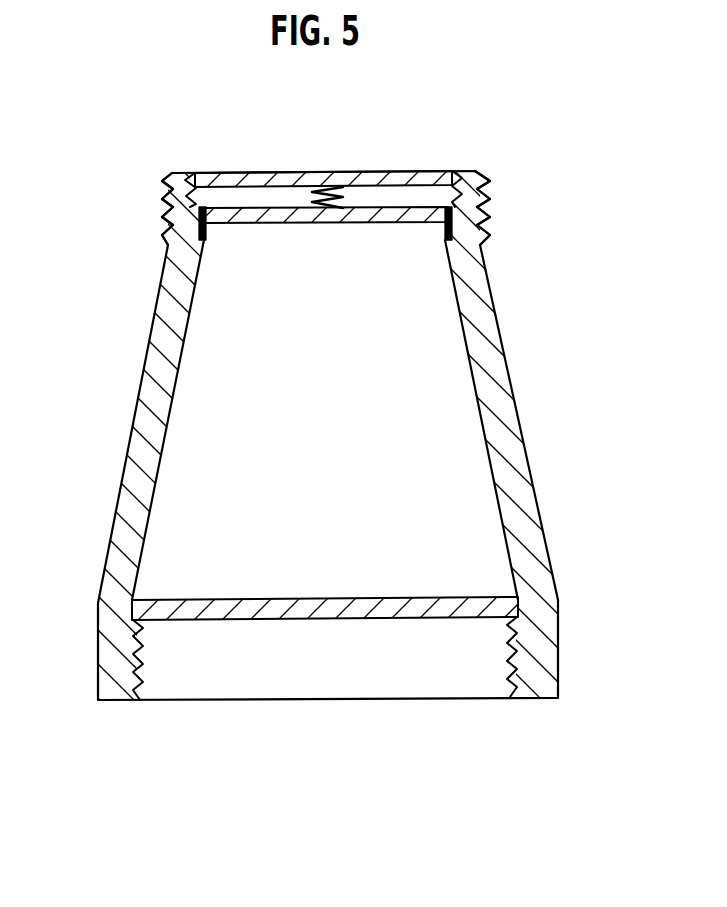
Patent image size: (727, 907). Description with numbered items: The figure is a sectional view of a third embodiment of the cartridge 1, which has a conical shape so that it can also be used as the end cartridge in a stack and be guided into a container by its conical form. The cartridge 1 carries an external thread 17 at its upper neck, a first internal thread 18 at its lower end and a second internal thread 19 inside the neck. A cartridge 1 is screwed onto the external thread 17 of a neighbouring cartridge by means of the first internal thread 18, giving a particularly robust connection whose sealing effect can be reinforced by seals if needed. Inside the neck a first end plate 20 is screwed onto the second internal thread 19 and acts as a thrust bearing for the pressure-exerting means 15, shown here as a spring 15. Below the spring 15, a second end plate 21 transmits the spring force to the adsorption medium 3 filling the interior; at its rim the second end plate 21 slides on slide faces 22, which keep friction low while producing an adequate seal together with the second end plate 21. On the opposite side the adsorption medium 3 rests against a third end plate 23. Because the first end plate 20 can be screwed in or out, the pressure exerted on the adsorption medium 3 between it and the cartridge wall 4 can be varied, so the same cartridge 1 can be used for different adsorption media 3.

The cartridge 1 is at (530, 338).
The adsorption medium 3 is at (393, 436).
The cartridge wall 4 is at (510, 468).
The pressure-exerting means 15 is at (318, 193).
The external thread 17 is at (490, 205).
The first internal thread 18 is at (139, 661).
The second internal thread 19 is at (428, 178).
The first end plate 20 is at (240, 180).
The second end plate 21 is at (367, 212).
The slide faces 22 is at (200, 216).
The third end plate 23 is at (407, 607).